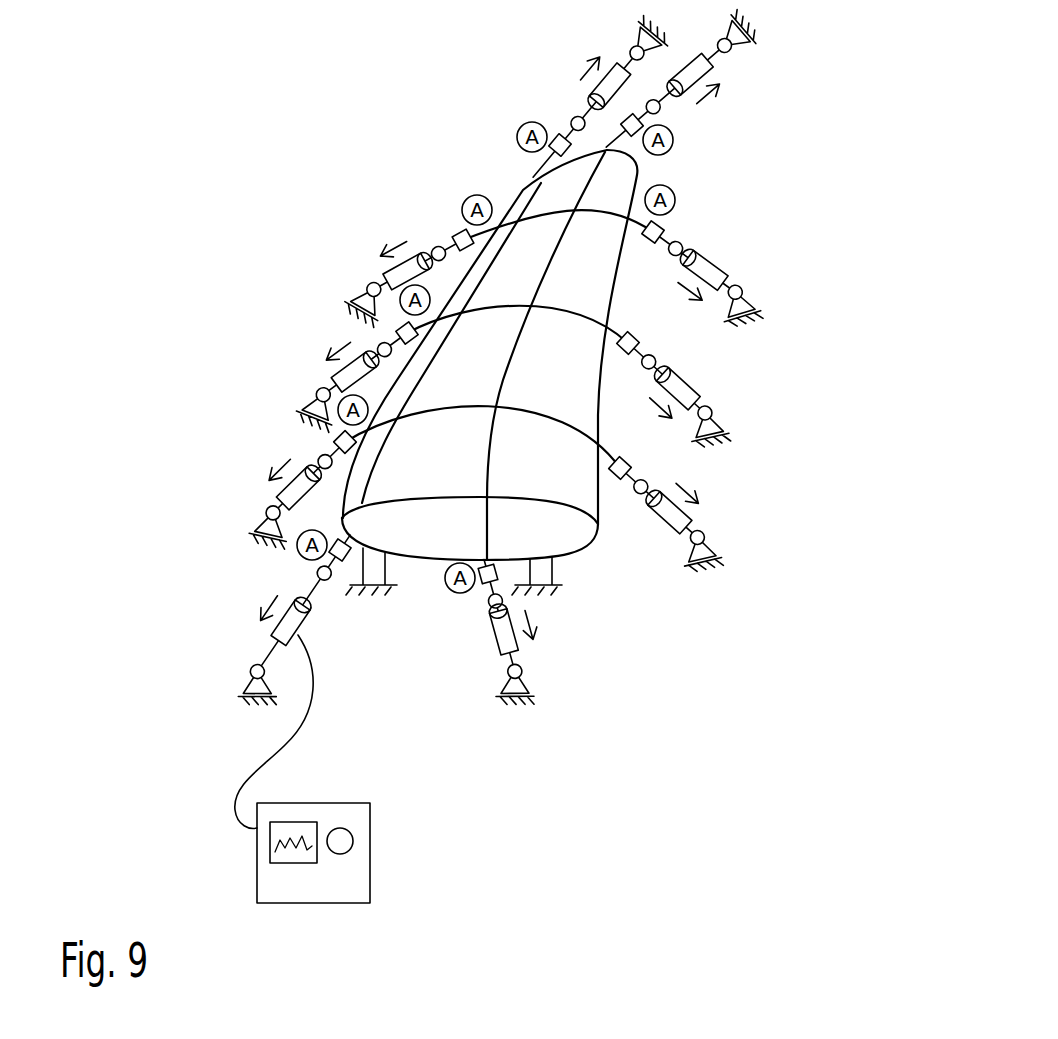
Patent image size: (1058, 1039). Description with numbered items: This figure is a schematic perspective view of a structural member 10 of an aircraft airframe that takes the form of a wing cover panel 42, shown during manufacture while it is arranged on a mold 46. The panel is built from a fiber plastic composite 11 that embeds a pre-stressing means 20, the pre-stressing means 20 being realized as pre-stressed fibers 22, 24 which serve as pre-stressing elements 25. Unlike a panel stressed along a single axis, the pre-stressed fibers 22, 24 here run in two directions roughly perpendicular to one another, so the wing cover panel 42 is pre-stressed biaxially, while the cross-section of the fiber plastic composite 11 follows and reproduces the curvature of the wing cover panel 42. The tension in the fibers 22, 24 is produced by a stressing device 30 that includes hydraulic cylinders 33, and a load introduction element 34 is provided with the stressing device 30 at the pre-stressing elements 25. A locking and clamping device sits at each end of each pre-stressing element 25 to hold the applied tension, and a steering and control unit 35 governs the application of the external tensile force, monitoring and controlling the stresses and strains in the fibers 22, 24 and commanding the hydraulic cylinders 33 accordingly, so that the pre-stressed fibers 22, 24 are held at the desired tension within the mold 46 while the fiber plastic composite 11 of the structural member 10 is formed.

The structural member 10 is at (658, 650).
The fiber plastic composite 11 is at (422, 482).
The pre-stressing means 20 is at (790, 347).
The pre-stressed fiber 22 is at (321, 284).
The pre-stressed fiber 24 is at (268, 320).
The pre-stressing element 25 is at (248, 366).
The stressing device 30 is at (808, 232).
The hydraulic cylinder 33 is at (718, 258).
The load introduction element 34 is at (633, 337).
The steering and control unit 35 is at (372, 827).
The wing cover panel 42 is at (464, 178).
The mold 46 is at (573, 538).